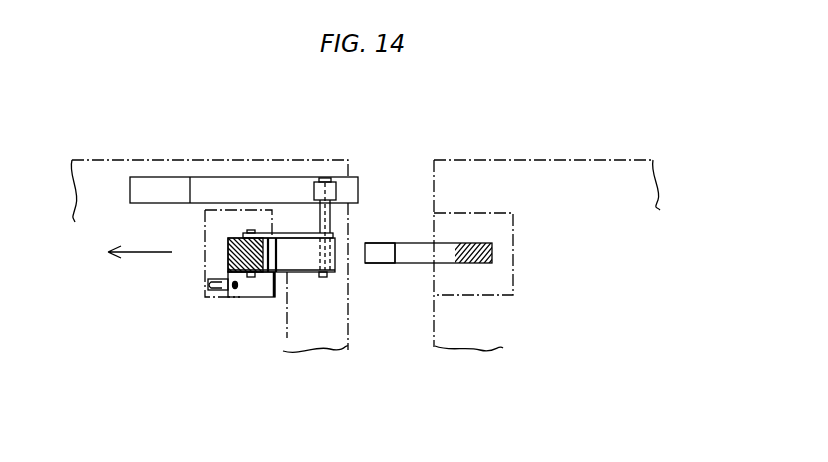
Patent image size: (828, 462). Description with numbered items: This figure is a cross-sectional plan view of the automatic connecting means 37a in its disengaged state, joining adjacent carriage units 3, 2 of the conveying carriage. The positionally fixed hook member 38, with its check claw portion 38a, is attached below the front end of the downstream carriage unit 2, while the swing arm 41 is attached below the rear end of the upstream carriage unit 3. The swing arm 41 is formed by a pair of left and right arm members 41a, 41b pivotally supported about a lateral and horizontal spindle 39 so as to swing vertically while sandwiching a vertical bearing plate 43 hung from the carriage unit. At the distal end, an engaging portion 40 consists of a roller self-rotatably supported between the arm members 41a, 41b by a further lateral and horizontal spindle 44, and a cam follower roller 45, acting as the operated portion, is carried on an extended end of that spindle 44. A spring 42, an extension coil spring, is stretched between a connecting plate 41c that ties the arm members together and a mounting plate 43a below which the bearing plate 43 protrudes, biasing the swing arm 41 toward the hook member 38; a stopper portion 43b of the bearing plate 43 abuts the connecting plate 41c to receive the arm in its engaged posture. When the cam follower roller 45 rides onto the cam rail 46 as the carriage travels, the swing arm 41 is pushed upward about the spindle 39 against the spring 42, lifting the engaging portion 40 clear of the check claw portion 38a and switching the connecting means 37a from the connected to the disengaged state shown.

The carriage unit 3 is at (102, 172).
The carriage unit 2 is at (587, 180).
The cam rail 46 is at (258, 183).
The cam follower roller 45 is at (325, 181).
The lateral and horizontal spindle 44 is at (328, 231).
The swing arm 41 is at (303, 226).
The arm member 41a is at (283, 257).
The arm member 41b is at (278, 237).
The connecting plate 41c is at (263, 276).
The engaging portion 40 is at (335, 262).
The bearing plate 43 is at (228, 255).
The mounting plate 43a is at (206, 265).
The stopper portion 43b is at (282, 272).
The spring 42 is at (222, 294).
The lateral and horizontal spindle 39 is at (250, 278).
The automatic connecting means 37a is at (416, 238).
The hook member 38 is at (422, 257).
The check claw portion 38a is at (383, 257).